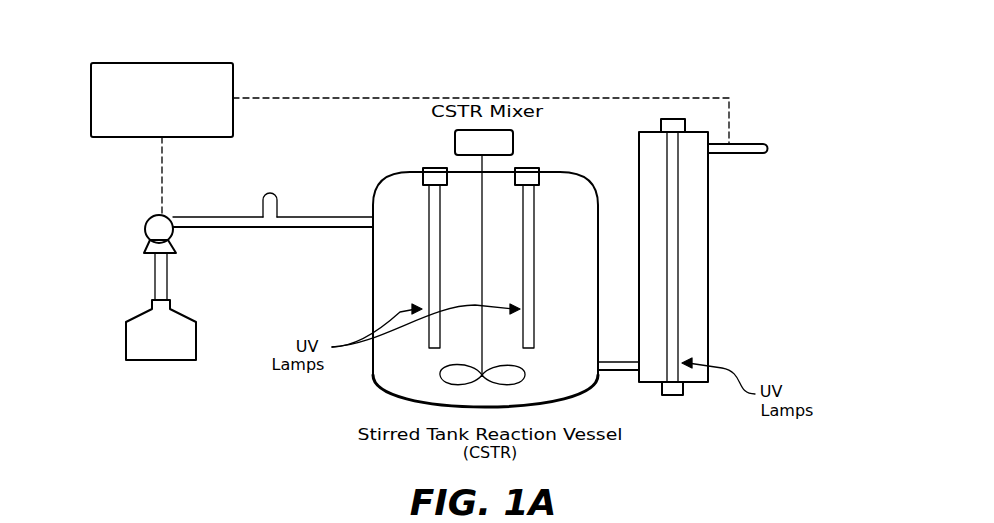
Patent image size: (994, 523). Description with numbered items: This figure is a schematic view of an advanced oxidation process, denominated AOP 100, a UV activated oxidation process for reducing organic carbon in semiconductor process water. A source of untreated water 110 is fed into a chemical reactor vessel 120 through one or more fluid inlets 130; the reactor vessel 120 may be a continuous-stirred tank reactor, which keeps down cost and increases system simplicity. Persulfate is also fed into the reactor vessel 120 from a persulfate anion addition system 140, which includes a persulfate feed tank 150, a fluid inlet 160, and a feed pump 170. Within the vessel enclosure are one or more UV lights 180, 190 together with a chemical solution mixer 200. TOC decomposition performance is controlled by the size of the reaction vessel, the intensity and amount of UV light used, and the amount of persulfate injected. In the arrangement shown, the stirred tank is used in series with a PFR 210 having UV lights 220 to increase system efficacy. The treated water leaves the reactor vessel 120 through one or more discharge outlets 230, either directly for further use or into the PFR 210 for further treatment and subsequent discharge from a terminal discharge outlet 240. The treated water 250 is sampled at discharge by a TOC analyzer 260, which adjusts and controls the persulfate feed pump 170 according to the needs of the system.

The AOP 100 is at (136, 47).
The source of untreated water 110 is at (278, 147).
The chemical reactor vessel 120 is at (378, 383).
The fluid inlets 130 is at (280, 210).
The persulfate anion addition system 140 is at (133, 272).
The persulfate feed tank 150 is at (181, 319).
The fluid inlet 160 is at (228, 229).
The feed pump 170 is at (149, 216).
The UV light 180 is at (430, 237).
The UV light 190 is at (535, 200).
The chemical solution mixer 200 is at (527, 376).
The PFR 210 is at (710, 257).
The UV lights 220 is at (678, 292).
The discharge outlets 230 is at (622, 373).
The terminal discharge outlet 240 is at (731, 140).
The treated water 250 is at (775, 153).
The TOC analyzer 260 is at (237, 84).